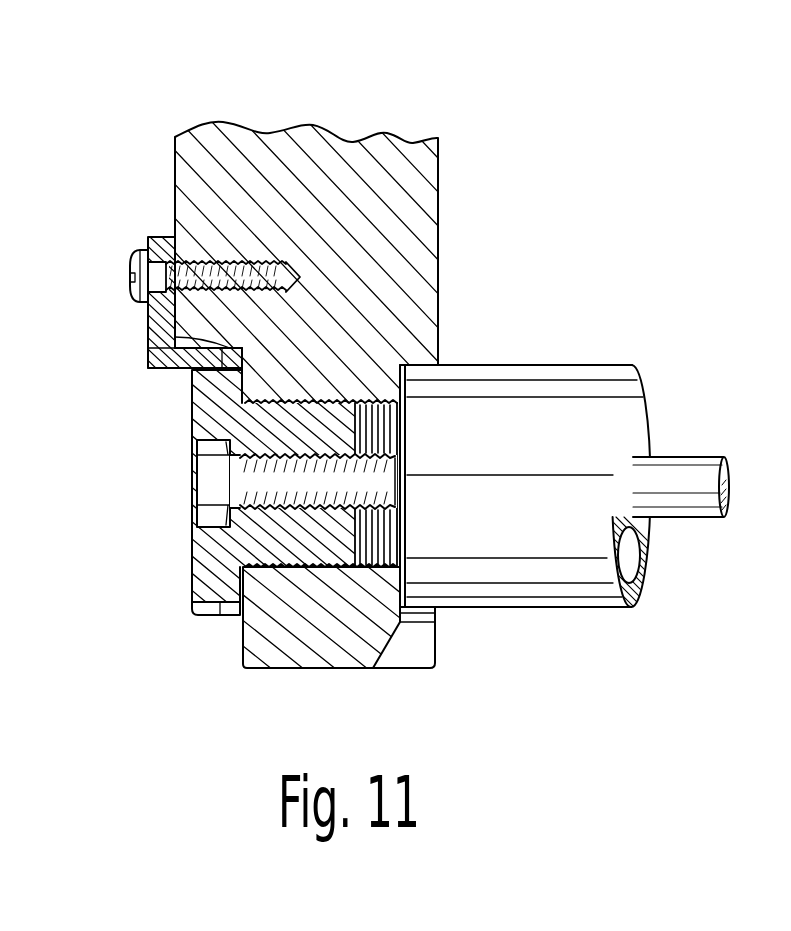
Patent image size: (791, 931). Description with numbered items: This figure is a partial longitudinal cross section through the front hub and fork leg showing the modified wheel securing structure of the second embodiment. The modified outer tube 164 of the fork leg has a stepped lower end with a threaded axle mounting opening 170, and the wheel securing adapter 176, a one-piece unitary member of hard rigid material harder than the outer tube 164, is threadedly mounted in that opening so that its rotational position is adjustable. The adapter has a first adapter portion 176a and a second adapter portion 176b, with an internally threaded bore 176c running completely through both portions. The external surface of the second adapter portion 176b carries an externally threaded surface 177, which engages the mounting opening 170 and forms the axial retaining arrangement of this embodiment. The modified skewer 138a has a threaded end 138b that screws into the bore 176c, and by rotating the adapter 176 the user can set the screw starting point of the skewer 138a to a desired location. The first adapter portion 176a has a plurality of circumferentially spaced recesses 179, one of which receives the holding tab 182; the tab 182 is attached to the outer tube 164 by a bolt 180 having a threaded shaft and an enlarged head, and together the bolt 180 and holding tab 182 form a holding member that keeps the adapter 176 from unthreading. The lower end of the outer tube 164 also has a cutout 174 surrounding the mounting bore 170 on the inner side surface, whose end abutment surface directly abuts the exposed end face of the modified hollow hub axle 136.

The hollow hub axle 136 is at (523, 365).
The skewer 138a is at (676, 457).
The threaded end 138b is at (387, 437).
The outer tube 164 is at (438, 190).
The threaded axle mounting opening 170 is at (248, 406).
The cutout 174 is at (437, 612).
The wheel securing adapter 176 is at (214, 555).
The first adapter portion 176a is at (205, 615).
The second adapter portion 176b is at (310, 545).
The internally threaded bore 176c is at (258, 484).
The externally threaded surface 177 is at (342, 570).
The recesses 179 is at (132, 488).
The bolt 180 is at (132, 258).
The holding tab 182 is at (150, 347).